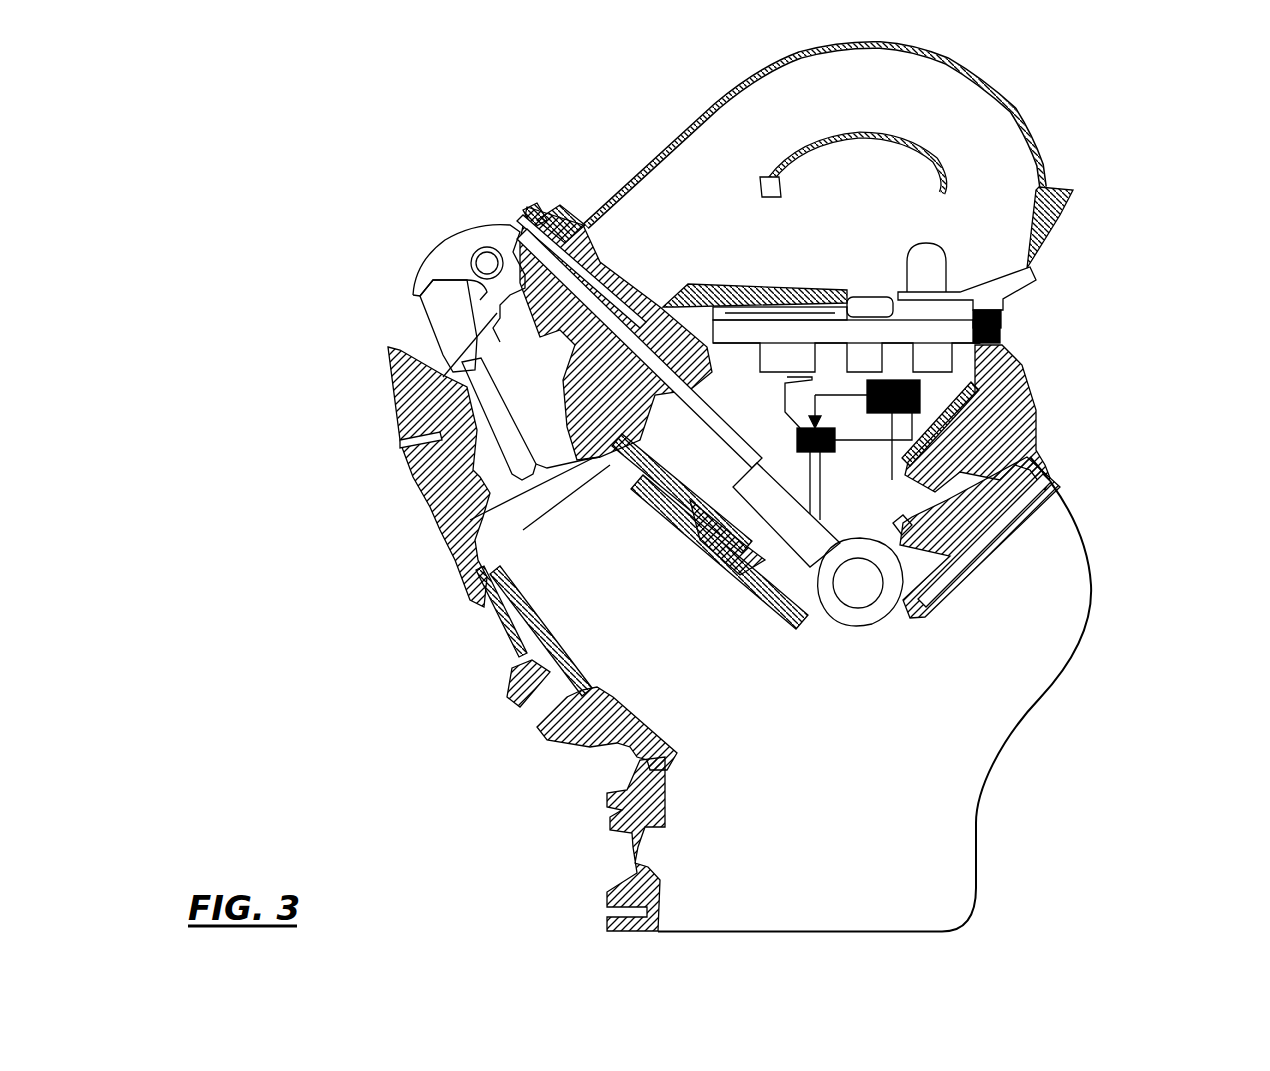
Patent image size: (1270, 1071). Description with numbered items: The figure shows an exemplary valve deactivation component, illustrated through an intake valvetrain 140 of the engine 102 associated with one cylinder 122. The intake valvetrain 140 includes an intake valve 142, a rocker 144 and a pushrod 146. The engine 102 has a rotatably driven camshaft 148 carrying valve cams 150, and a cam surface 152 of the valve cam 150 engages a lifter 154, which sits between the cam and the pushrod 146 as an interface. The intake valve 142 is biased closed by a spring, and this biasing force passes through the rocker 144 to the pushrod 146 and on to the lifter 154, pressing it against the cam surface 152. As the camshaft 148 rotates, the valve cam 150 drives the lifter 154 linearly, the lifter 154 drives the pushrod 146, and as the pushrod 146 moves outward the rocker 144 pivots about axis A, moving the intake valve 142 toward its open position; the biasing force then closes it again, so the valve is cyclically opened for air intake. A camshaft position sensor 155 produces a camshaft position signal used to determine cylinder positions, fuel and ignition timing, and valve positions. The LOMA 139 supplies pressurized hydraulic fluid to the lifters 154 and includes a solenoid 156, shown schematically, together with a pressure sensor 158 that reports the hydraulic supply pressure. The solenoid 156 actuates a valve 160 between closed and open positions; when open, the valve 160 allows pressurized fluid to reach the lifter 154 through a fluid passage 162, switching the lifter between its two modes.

The engine 102 is at (1090, 592).
The cylinder 122 is at (577, 607).
The LOMA 139 is at (872, 295).
The intake valvetrain 140 is at (514, 148).
The intake valve 142 is at (428, 325).
The rocker 144 is at (428, 250).
The pushrod 146 is at (648, 473).
The camshaft 148 is at (856, 588).
The valve cam 150 is at (863, 617).
The cam surface 152 is at (913, 614).
The lifter 154 is at (737, 563).
The camshaft position sensor 155 is at (975, 557).
The solenoid 156 is at (892, 440).
The pressure sensor 158 is at (990, 310).
The valve 160 is at (795, 428).
The fluid passage 162 is at (808, 483).
The axis A is at (487, 262).